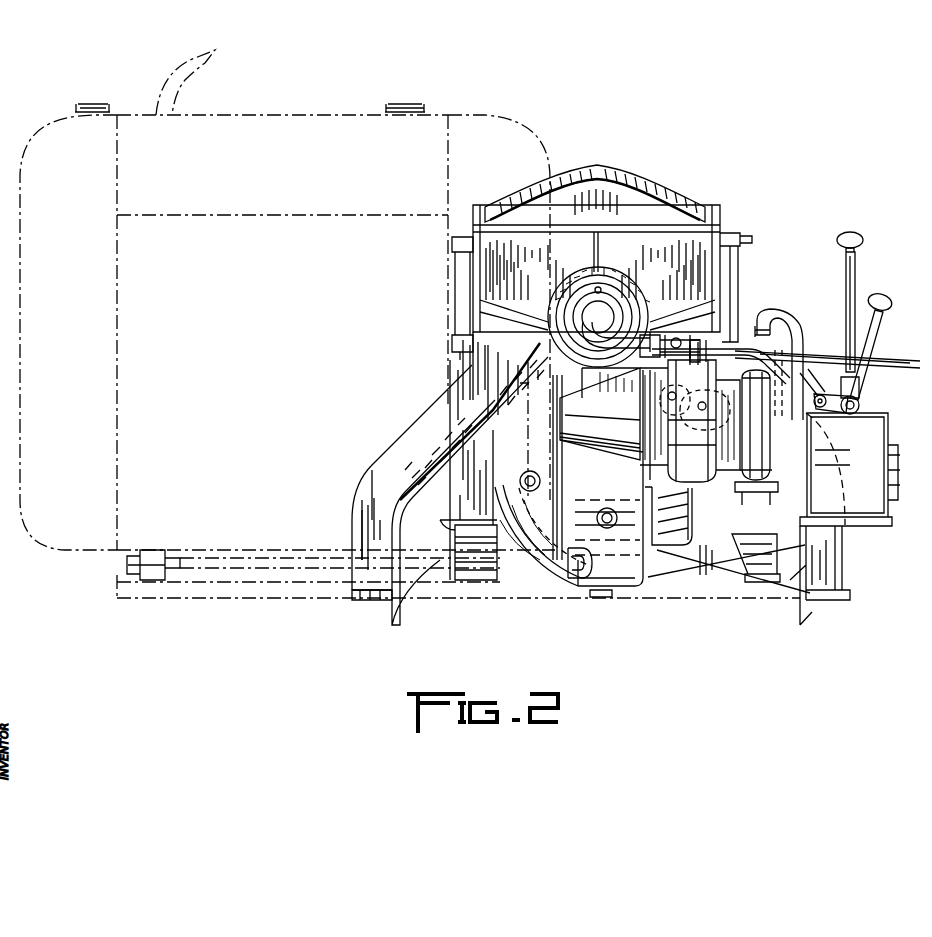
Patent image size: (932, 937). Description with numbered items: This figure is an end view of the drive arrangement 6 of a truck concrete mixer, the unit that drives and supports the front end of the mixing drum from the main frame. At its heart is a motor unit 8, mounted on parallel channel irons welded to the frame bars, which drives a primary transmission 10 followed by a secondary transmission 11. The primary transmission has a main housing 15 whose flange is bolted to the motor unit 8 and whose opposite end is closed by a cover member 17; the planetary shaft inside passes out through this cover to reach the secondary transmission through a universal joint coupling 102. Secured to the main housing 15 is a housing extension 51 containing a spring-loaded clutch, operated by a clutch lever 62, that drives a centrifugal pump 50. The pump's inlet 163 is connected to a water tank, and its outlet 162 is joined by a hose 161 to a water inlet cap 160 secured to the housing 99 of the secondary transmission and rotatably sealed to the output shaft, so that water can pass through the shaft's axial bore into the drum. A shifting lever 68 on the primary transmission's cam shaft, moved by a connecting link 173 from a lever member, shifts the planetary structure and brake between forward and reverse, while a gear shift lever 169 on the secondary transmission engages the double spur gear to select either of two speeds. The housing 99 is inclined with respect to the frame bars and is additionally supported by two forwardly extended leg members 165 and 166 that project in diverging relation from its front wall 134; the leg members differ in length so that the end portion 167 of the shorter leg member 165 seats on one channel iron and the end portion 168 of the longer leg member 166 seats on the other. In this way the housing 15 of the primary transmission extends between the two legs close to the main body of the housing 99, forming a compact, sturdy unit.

The drive arrangement 6 is at (536, 593).
The motor unit 8 is at (240, 540).
The primary transmission 10 is at (623, 403).
The secondary transmission 11 is at (760, 281).
The housing 15 is at (582, 598).
The cover member 17 is at (694, 558).
The centrifugal pump 50 is at (756, 497).
The housing extension 51 is at (612, 450).
The clutch lever 62 is at (645, 375).
The shifting lever 68 is at (677, 338).
The housing 99 is at (723, 232).
The universal joint coupling 102 is at (732, 498).
The front wall 134 is at (485, 284).
The water inlet cap 160 is at (575, 318).
The hose 161 is at (648, 323).
The outlet 162 is at (800, 360).
The inlet 163 is at (672, 412).
The leg member 165 is at (400, 444).
The leg member 166 is at (840, 554).
The end portion 167 is at (380, 602).
The end portion 168 is at (836, 600).
The gear shift lever 169 is at (850, 274).
The connecting link 173 is at (857, 391).